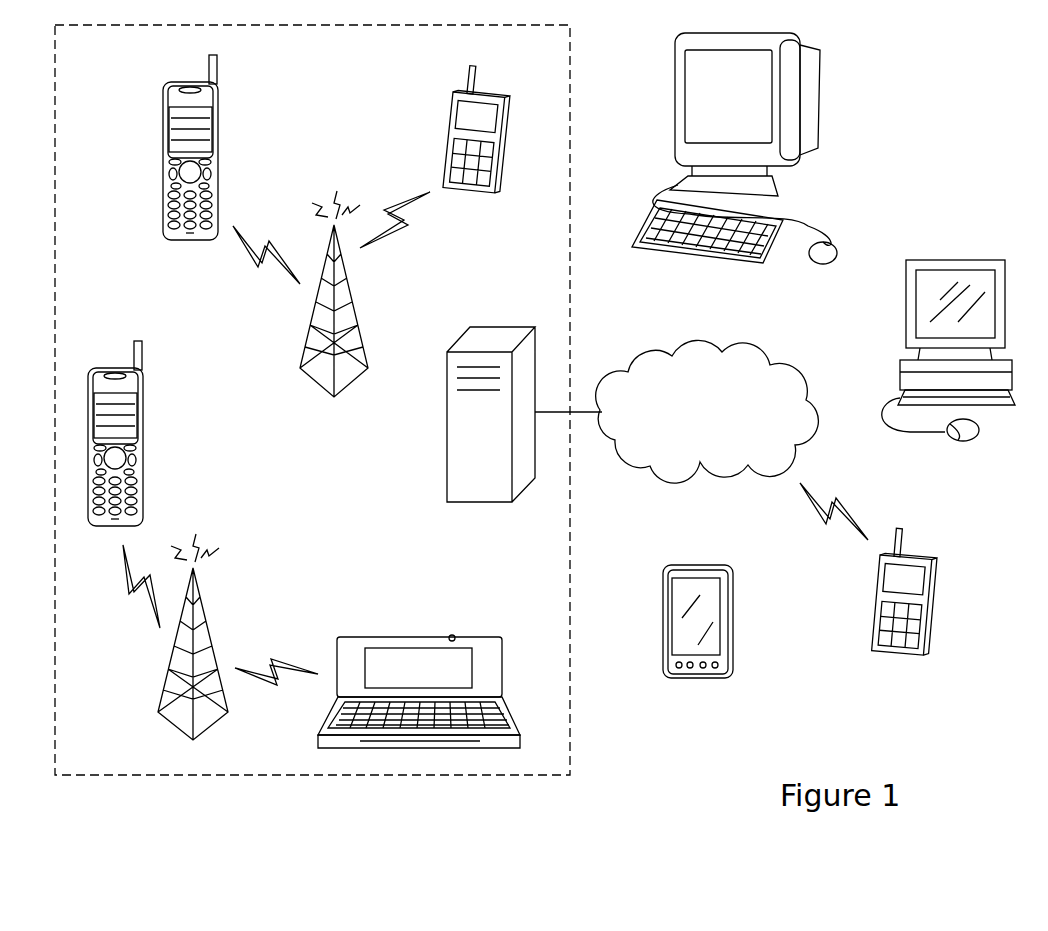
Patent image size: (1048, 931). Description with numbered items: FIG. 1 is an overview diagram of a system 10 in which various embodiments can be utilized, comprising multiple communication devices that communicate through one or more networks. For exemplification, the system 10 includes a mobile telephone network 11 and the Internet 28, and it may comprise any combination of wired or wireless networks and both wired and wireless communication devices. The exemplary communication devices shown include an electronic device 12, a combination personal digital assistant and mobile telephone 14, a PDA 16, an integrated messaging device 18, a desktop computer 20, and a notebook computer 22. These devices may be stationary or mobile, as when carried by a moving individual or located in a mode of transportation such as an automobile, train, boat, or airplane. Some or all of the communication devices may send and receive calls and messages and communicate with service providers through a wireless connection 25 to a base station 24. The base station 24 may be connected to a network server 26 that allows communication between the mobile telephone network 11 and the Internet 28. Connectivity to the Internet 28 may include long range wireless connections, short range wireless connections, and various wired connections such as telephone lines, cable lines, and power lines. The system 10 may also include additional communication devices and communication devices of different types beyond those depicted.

The system 10 is at (994, 506).
The mobile telephone network 11 is at (94, 64).
The electronic device 12 is at (219, 158).
The combination personal digital assistant (PDA) and mobile telephone 14 is at (415, 637).
The PDA 16 is at (735, 618).
The integrated messaging device (IMD) 18 is at (452, 140).
The desktop computer 20 is at (820, 86).
The notebook computer 22 is at (960, 260).
The base station 24 is at (350, 300).
The wireless connection 25 is at (138, 612).
The network server 26 is at (445, 428).
The Internet 28 is at (740, 344).